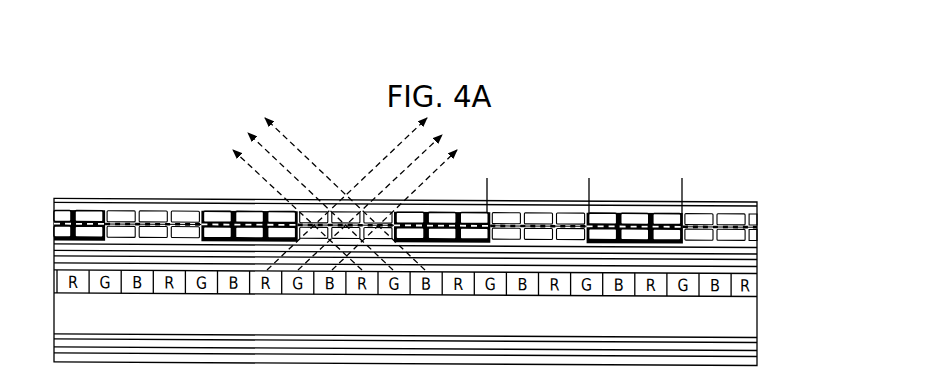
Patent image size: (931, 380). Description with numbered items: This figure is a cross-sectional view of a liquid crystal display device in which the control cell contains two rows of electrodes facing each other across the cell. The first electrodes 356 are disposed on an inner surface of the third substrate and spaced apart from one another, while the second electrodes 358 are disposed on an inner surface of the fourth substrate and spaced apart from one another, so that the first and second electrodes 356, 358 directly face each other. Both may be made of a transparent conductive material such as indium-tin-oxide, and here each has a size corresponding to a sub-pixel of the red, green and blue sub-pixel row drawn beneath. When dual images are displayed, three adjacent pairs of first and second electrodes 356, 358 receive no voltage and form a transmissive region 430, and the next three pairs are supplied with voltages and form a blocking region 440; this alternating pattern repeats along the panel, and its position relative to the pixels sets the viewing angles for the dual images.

The second electrodes 358 is at (732, 218).
The first electrodes 356 is at (740, 238).
The transmissive region 430 is at (589, 183).
The blocking region 440 is at (682, 183).